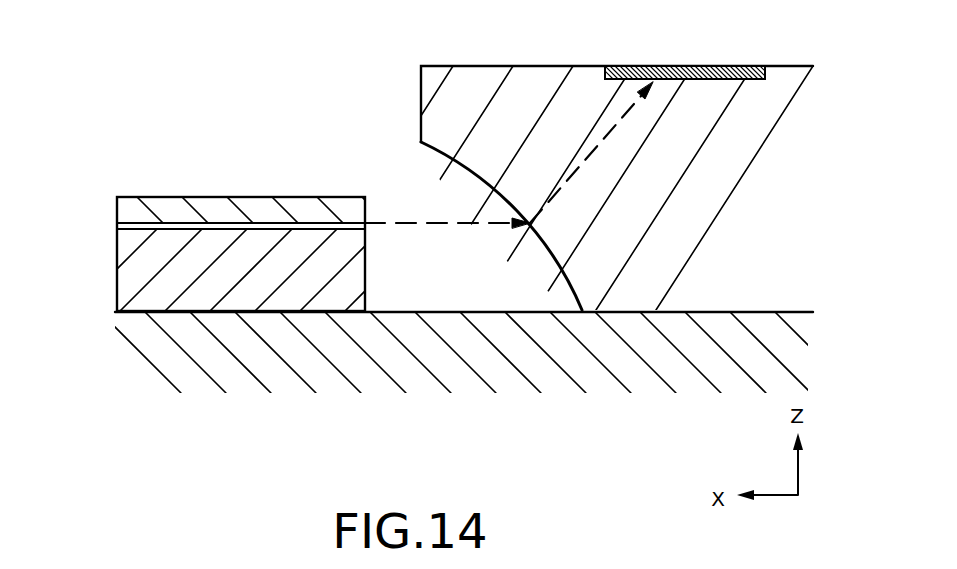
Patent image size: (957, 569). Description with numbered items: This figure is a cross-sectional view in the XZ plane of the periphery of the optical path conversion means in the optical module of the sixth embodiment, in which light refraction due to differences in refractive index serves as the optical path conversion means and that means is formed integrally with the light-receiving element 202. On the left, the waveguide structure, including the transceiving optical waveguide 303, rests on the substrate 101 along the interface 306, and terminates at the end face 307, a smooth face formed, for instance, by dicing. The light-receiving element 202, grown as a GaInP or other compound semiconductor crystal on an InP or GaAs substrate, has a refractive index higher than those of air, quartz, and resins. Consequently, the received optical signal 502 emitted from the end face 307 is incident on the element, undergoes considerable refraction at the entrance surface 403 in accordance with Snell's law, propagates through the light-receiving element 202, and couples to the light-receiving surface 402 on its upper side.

The substrate 101 is at (135, 352).
The light-receiving element 202 is at (503, 66).
The transceiving optical waveguide 303 is at (218, 232).
The interface surface on substrate 306 is at (640, 312).
The receiving optical waveguide end face 307 is at (355, 200).
The light-receiving surface 402 is at (697, 66).
The entrance surface 403 is at (538, 235).
The received optical signal 502 is at (575, 167).